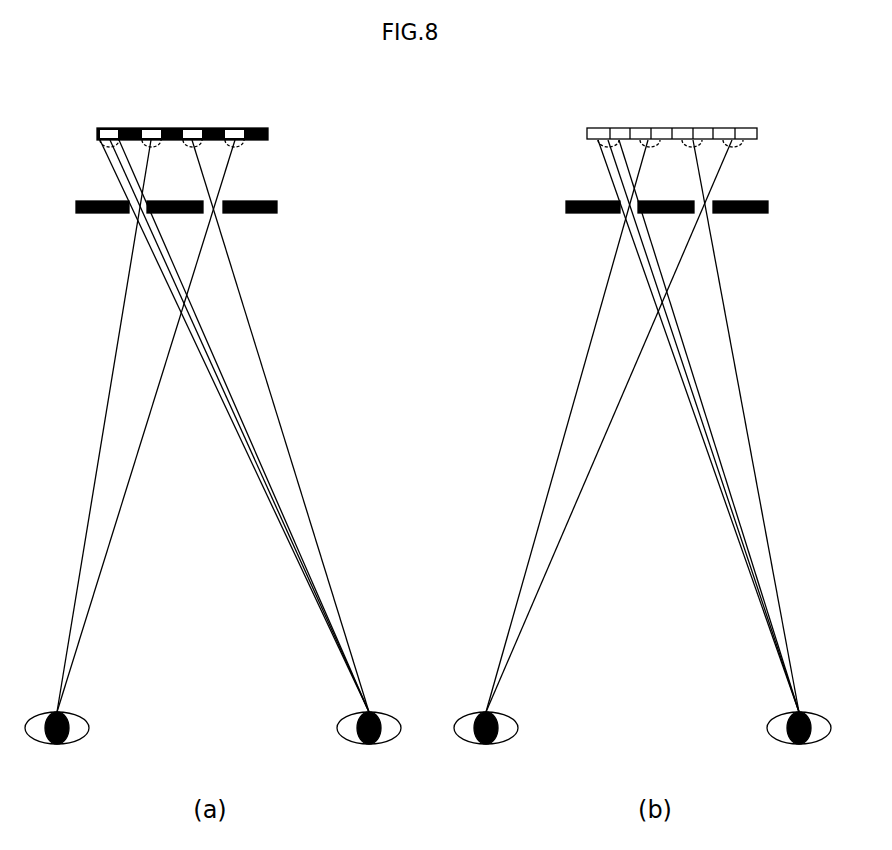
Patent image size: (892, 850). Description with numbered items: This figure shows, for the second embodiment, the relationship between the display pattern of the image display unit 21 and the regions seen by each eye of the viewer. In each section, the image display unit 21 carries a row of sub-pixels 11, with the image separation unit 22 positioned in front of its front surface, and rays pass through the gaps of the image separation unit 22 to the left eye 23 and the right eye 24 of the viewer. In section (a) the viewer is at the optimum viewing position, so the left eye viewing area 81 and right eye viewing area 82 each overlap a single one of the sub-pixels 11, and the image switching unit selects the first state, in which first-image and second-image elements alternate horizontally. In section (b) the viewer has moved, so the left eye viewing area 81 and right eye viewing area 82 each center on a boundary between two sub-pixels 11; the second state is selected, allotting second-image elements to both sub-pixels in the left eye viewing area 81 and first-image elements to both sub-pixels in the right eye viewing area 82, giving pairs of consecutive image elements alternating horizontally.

The sub-pixel 11 is at (107, 131).
The image display unit 21 is at (267, 128).
The image separation unit 22 is at (257, 213).
The left eye 23 is at (45, 745).
The right eye 24 is at (358, 747).
The left eye viewing area 81 is at (243, 147).
The right eye viewing area 82 is at (103, 146).